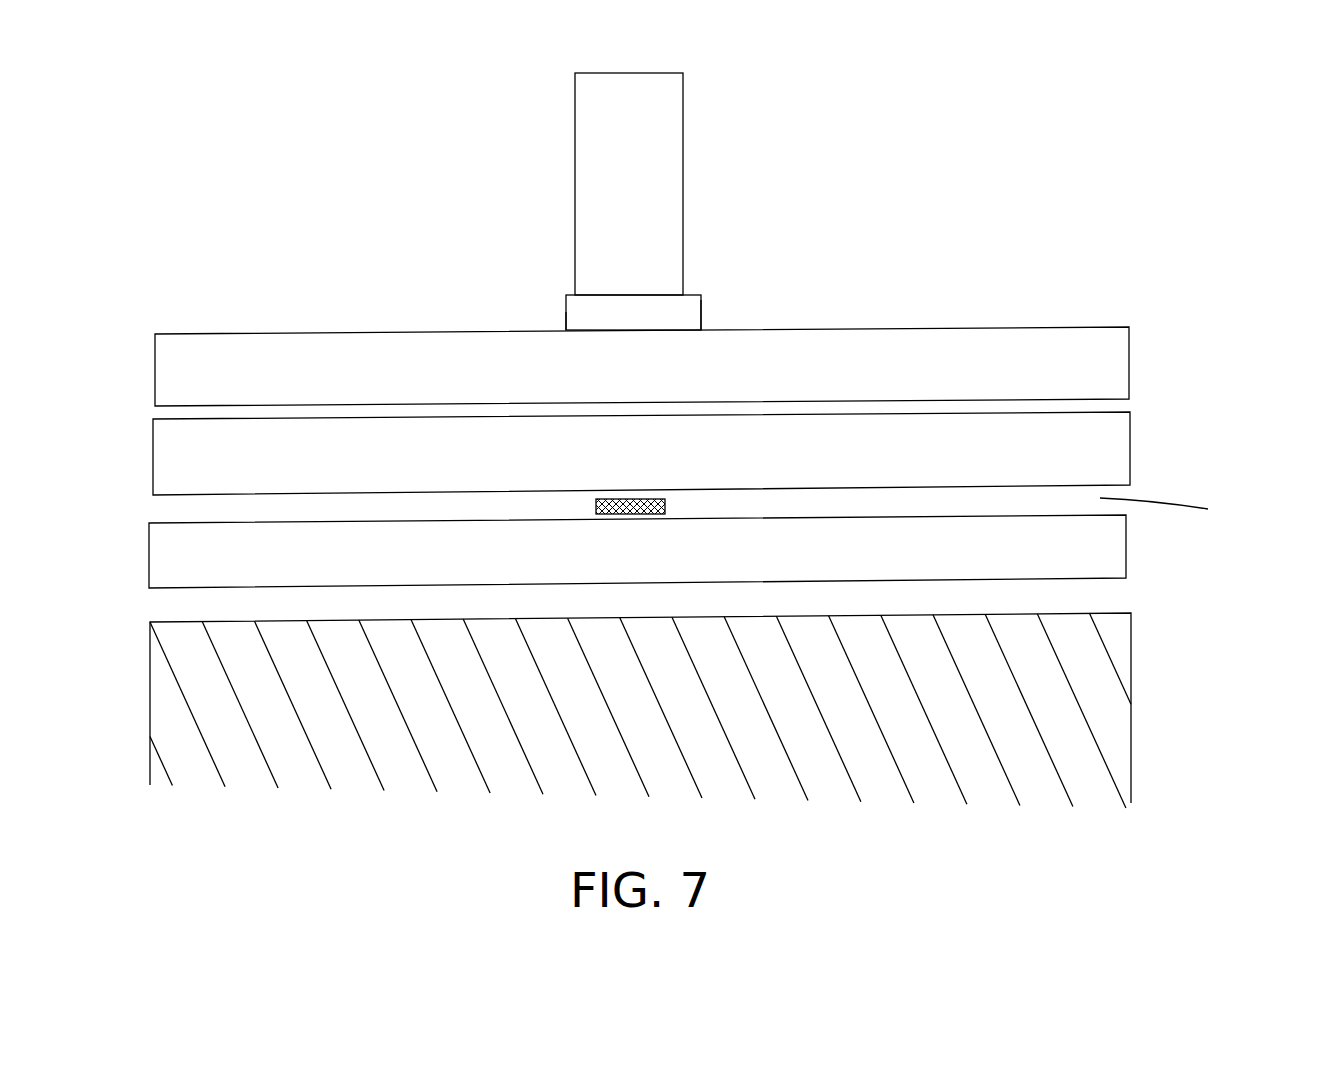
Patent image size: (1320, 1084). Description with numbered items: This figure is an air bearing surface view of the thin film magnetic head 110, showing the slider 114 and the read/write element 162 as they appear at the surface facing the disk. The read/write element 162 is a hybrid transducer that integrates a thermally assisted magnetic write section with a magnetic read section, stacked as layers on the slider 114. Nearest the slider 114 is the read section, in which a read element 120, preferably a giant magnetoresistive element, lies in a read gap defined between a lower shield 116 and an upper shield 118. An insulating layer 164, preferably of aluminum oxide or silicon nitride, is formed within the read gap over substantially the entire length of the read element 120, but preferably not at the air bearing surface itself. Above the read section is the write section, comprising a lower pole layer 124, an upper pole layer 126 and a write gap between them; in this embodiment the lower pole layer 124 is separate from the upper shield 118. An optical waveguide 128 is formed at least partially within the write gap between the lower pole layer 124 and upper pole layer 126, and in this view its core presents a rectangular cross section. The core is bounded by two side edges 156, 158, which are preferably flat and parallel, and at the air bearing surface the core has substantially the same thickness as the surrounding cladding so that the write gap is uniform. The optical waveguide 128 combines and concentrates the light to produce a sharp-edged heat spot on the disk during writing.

The thin film magnetic head 110 is at (412, 224).
The read/write element 162 is at (1025, 248).
The upper pole layer 126 is at (665, 144).
The optical waveguide 128 is at (658, 302).
The side edge 156 is at (564, 323).
The side edge 158 is at (702, 312).
The lower pole layer 124 is at (1093, 357).
The upper shield 118 is at (1110, 447).
The insulating layer 164 is at (1173, 512).
The read element 120 is at (628, 499).
The lower shield 116 is at (1110, 557).
The slider 114 is at (1103, 707).